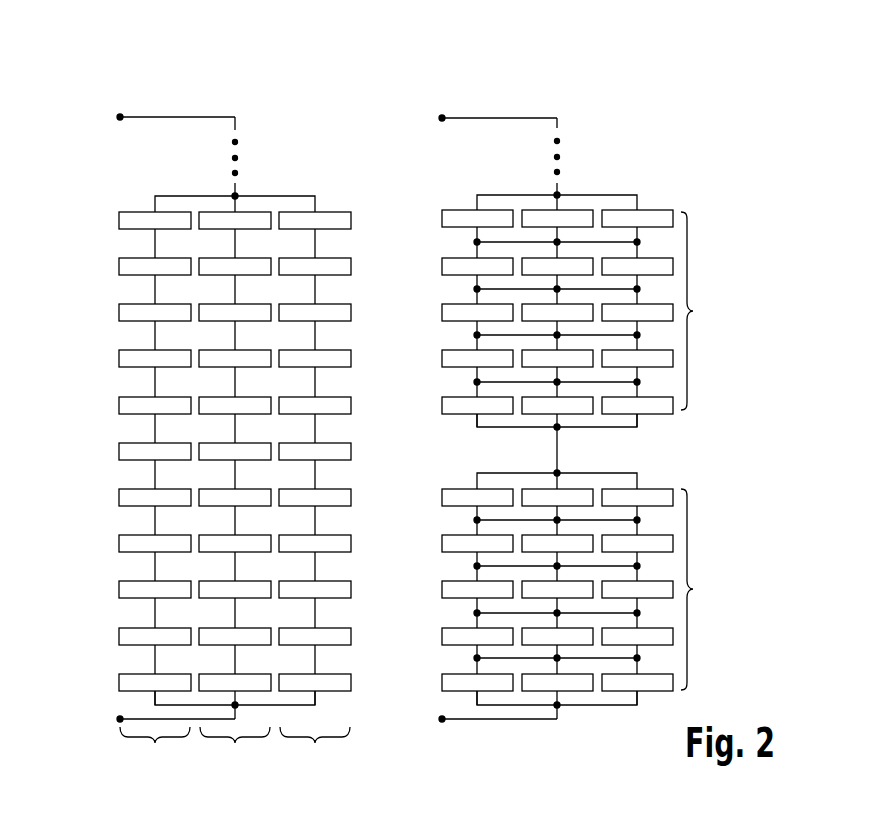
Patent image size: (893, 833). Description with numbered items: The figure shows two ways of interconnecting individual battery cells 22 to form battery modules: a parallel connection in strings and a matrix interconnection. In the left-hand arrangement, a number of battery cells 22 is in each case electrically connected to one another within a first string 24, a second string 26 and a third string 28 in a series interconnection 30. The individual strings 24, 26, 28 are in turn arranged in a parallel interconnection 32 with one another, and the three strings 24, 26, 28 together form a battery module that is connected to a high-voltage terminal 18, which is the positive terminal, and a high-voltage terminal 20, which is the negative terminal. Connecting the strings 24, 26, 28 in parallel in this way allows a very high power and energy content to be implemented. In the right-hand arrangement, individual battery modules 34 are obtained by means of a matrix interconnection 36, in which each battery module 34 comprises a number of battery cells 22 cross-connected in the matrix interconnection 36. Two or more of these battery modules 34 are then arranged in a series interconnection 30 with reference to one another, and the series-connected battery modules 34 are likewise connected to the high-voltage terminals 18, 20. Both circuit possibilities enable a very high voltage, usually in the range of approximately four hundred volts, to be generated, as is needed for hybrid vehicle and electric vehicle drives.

The high-voltage terminal 18 is at (120, 120).
The high-voltage terminal 20 is at (118, 716).
The battery cell 22 is at (119, 221).
The first string 24 is at (155, 104).
The second string 26 is at (235, 104).
The third string 28 is at (315, 104).
The series interconnection 30 is at (146, 567).
The parallel interconnection 32 is at (173, 196).
The battery module 34 is at (423, 493).
The matrix interconnection 36 is at (660, 242).